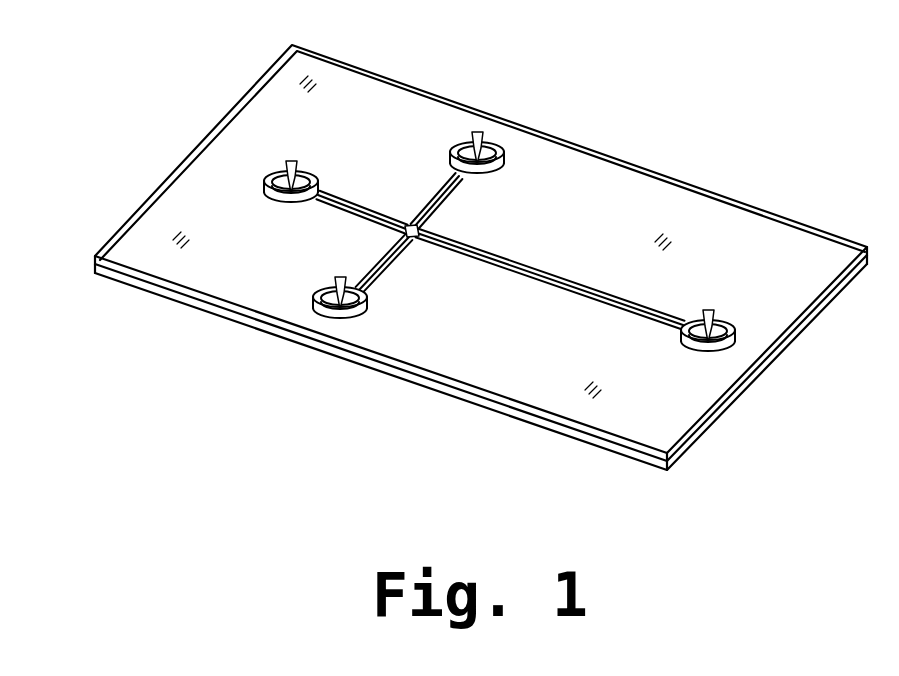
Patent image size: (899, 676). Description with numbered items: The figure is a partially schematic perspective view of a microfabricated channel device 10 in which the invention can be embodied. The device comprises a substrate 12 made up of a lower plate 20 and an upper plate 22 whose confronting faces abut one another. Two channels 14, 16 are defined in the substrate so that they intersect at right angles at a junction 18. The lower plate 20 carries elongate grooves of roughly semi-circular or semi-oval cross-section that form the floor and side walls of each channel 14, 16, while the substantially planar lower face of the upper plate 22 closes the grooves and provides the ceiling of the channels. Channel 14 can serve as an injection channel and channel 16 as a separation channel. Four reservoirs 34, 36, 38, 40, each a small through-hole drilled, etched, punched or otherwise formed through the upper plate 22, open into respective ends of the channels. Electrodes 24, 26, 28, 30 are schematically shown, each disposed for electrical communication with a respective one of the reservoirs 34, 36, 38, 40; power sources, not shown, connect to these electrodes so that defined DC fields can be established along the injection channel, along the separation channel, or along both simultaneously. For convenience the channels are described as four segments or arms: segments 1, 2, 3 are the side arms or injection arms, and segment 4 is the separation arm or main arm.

The channel device 10 is at (447, 242).
The substrate 12 is at (447, 257).
The channel 14 is at (381, 331).
The channel 16 is at (550, 342).
The junction 18 is at (416, 224).
The lower plate 20 is at (127, 278).
The upper plate 22 is at (130, 230).
The electrode 24 is at (768, 359).
The electrode 26 is at (281, 342).
The electrode 28 is at (232, 136).
The electrode 30 is at (531, 114).
The reservoir 34 is at (720, 338).
The reservoir 36 is at (338, 312).
The reservoir 38 is at (283, 165).
The reservoir 40 is at (488, 160).
The segment 1 is at (447, 201).
The segment 2 is at (361, 199).
The segment 3 is at (376, 258).
The segment 4 is at (550, 279).